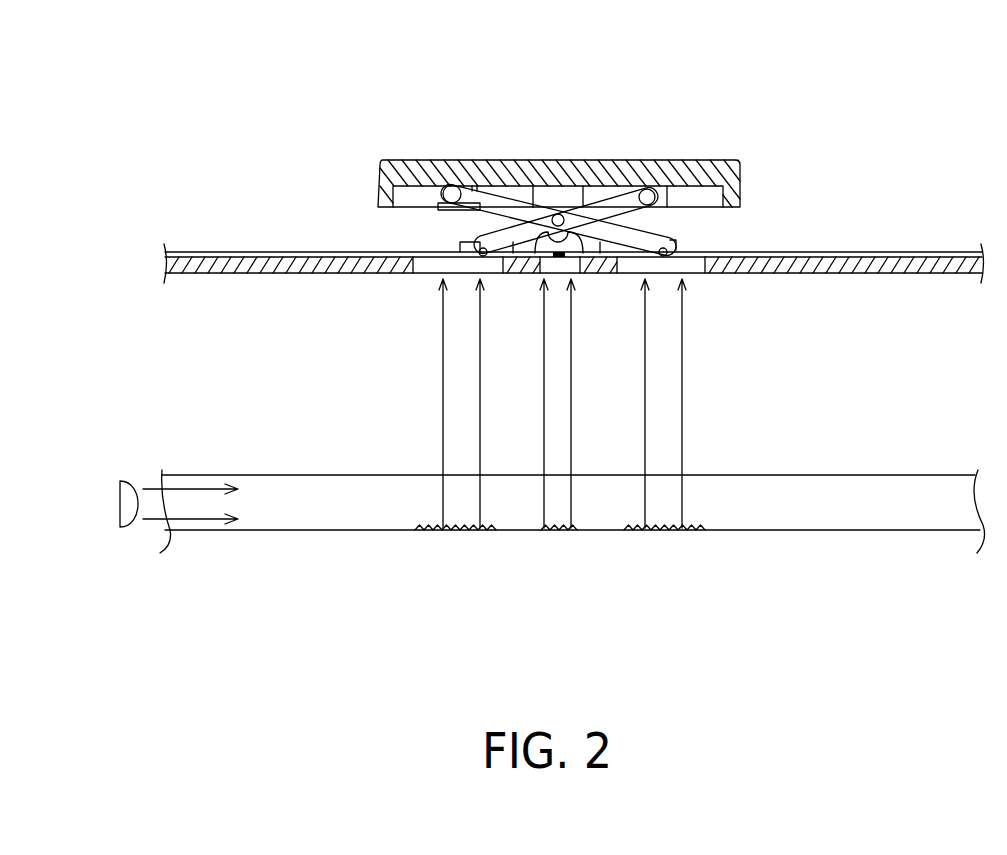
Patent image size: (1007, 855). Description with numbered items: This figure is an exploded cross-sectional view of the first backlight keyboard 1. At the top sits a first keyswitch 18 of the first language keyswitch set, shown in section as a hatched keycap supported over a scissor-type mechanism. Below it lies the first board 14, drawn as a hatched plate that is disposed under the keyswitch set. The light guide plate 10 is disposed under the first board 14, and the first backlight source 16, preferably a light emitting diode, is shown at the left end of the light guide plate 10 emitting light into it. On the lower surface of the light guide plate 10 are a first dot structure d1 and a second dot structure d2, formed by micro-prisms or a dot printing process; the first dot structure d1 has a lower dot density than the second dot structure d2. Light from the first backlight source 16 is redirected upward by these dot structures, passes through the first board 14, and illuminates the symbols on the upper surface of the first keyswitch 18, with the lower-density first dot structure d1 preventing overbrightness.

The first backlight keyboard 1 is at (193, 108).
The light guide plate 10 is at (289, 531).
The first board 14 is at (165, 262).
The first backlight source 16 is at (120, 502).
The first keyswitch 18 is at (715, 157).
The first dot structure d1 is at (462, 533).
The second dot structure d2 is at (553, 533).